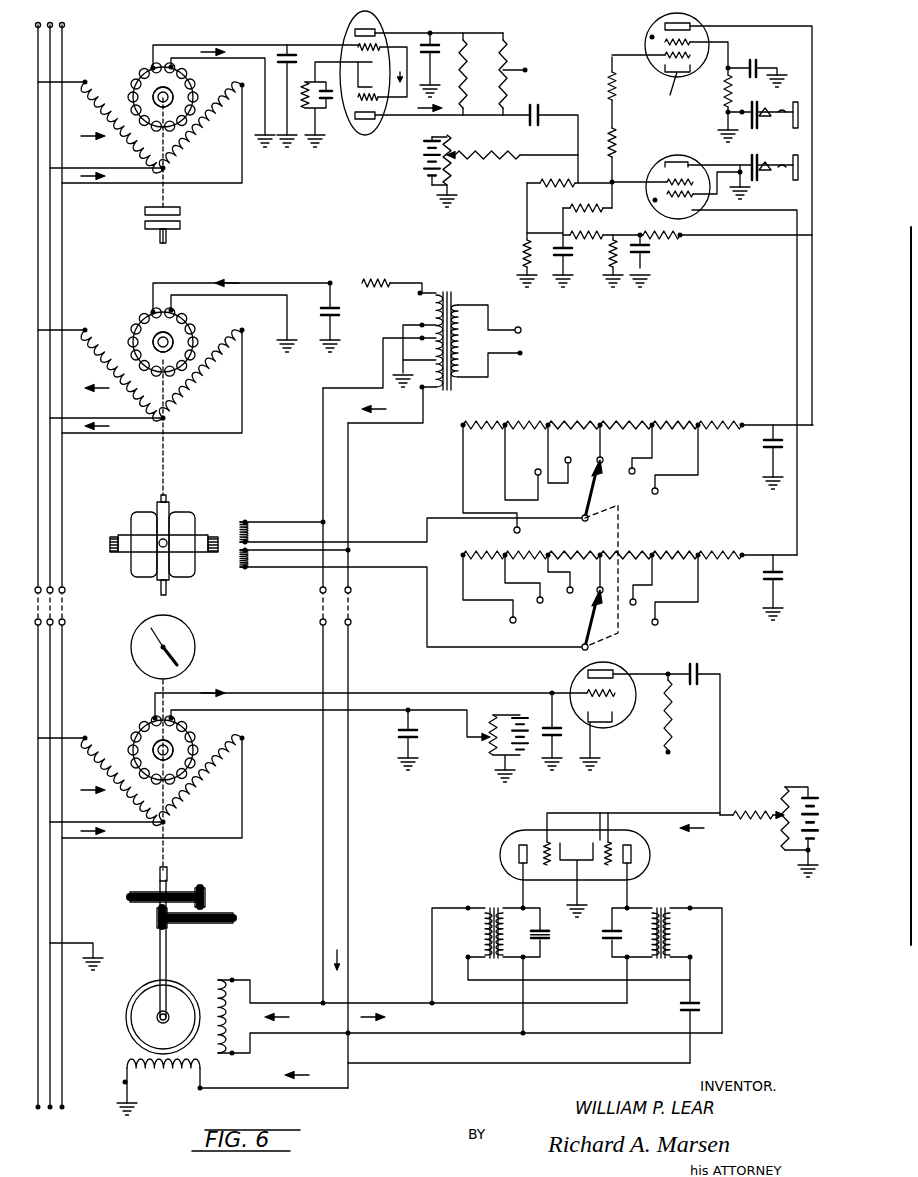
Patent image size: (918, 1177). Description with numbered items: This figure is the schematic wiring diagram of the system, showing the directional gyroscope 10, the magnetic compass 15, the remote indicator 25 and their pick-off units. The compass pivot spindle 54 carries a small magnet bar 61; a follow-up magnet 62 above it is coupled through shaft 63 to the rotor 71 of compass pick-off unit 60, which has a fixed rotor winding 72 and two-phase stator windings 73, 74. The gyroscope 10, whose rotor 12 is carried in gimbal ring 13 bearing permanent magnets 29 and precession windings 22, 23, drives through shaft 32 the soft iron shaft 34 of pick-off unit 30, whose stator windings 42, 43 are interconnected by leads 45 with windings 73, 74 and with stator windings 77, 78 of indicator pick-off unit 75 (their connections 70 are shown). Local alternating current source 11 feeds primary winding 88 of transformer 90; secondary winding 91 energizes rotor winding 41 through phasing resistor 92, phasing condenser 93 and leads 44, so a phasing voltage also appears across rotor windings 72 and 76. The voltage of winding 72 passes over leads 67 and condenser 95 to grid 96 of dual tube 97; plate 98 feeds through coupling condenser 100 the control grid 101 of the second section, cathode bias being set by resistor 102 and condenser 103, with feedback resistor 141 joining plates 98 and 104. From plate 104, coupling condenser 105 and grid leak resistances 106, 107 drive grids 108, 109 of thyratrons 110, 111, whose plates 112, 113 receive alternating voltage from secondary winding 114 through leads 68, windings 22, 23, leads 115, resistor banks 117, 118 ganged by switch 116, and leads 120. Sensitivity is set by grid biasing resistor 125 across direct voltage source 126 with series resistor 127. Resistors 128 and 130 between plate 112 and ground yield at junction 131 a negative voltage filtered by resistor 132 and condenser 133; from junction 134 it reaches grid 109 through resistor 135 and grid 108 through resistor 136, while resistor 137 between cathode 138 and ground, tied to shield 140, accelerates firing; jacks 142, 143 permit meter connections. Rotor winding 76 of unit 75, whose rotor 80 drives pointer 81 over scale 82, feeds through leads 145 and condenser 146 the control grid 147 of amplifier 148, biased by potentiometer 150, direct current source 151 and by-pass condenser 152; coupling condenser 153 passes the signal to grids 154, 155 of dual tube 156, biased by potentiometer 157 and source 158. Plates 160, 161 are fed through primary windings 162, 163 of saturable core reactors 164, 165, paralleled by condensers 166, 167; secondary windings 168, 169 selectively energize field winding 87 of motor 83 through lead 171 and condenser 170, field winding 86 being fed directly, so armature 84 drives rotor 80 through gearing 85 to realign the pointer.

The leads 45 is at (66, 22).
The directional pick-off unit 60 is at (130, 64).
The leads 67 is at (240, 46).
The rotor 71 is at (160, 87).
The fixed rotor winding 72 is at (193, 95).
The stator winding 73 is at (100, 112).
The stator winding 74 is at (200, 128).
The shaft 63 is at (168, 168).
The follow-up magnet 62 is at (178, 209).
The magnetic compass 15 is at (106, 221).
The small magnet bar 61 is at (168, 238).
The pivot spindle 54 is at (158, 240).
The phasing and by-pass condenser 95 is at (292, 48).
The resistor 102 is at (305, 85).
The dual electronic tube 97 is at (368, 135).
The plate 98 is at (375, 30).
The grid 96 is at (383, 47).
The control grid 101 is at (338, 118).
The condenser 103 is at (348, 140).
The plate 104 is at (375, 118).
The coupling condenser 100 is at (432, 38).
The resistor 141 is at (506, 74).
The coupling condenser 105 is at (533, 112).
The adjustable grid biasing resistor 125 is at (452, 172).
The source of steady unidirectional voltage 126 is at (425, 182).
The resistor 127 is at (498, 154).
The resistor 136 is at (553, 182).
The junction 134 is at (563, 214).
The condenser 133 is at (562, 278).
The resistor 135 is at (600, 207).
The resistor 132 is at (600, 232).
The resistor 130 is at (610, 255).
The plate 113 is at (645, 235).
The resistor 128 is at (670, 240).
The control tube 110 is at (645, 27).
The plate 112 is at (693, 26).
The shield 140 is at (700, 40).
The grid 108 is at (648, 53).
The cathode 138 is at (668, 93).
The grid leak resistance 106 is at (614, 90).
The grid leak resistance 107 is at (614, 140).
The resistor 137 is at (726, 100).
The jack 142 is at (765, 108).
The jack 143 is at (760, 165).
The control tube 111 is at (690, 212).
The grid 109 is at (665, 165).
The junction 131 is at (630, 192).
The leads 120 is at (812, 378).
The leads 44 is at (270, 285).
The gyroscope bearing pick-off unit 30 is at (118, 316).
The hollow soft iron shaft 34 is at (161, 333).
The rotor winding 41 is at (195, 340).
The stator winding 42 is at (104, 366).
The stator winding 43 is at (185, 400).
The central vertical shaft 32 is at (166, 458).
The phasing resistor 92 is at (412, 280).
The phasing condenser 93 is at (340, 312).
The transformer 90 is at (451, 292).
The secondary winding 114 is at (436, 390).
The secondary winding 91 is at (420, 324).
The primary winding 88 is at (470, 378).
The local alternating current source 11 is at (520, 330).
The leads 68 is at (323, 484).
The leads 115 is at (370, 550).
The precession correction winding 22 is at (248, 530).
The precession correction winding 23 is at (249, 556).
The directional gyroscope 10 is at (118, 496).
The rotor 12 is at (169, 502).
The gimbal ring 13 is at (125, 552).
The permanent magnets 29 is at (110, 540).
The limiting resistor bank 117 is at (612, 408).
The gang switch 116 is at (622, 508).
The limiting resistor bank 118 is at (650, 553).
The indicating scale 82 is at (196, 645).
The pointer 81 is at (175, 636).
The leads 145 is at (264, 708).
The pick-off unit 75 is at (289, 792).
The fixed rotor winding 76 is at (192, 732).
The rotor 80 is at (180, 746).
The conductors 70 is at (86, 738).
The stator winding 77 is at (130, 795).
The stator winding 78 is at (194, 795).
The remote indicator 25 is at (119, 869).
The gearing 85 is at (213, 926).
The armature 84 is at (172, 995).
The motor 83 is at (107, 1022).
The field winding 86 is at (232, 990).
The field winding 87 is at (180, 1075).
The electronic amplifier 148 is at (612, 665).
The coupling condenser 153 is at (692, 665).
The control grid 147 is at (660, 695).
The phasing and by-pass condenser 146 is at (552, 693).
The by-pass condenser 152 is at (418, 735).
The potentiometer 150 is at (493, 714).
The source of direct current 151 is at (522, 716).
The dual electronic tube 156 is at (650, 868).
The plate 160 is at (518, 855).
The grid 154 is at (545, 835).
The grid 155 is at (603, 838).
The plate 161 is at (632, 852).
The potentiometer 157 is at (780, 814).
The source of direct current 158 is at (805, 795).
The saturable core reactor 164 is at (490, 907).
The secondary winding 168 is at (470, 945).
The primary winding 162 is at (517, 970).
The condenser 166 is at (548, 937).
The saturable core reactor 165 is at (666, 909).
The primary winding 163 is at (648, 957).
The condenser 167 is at (605, 945).
The secondary winding 169 is at (675, 940).
The condenser 170 is at (700, 1009).
The lead 171 is at (578, 1062).